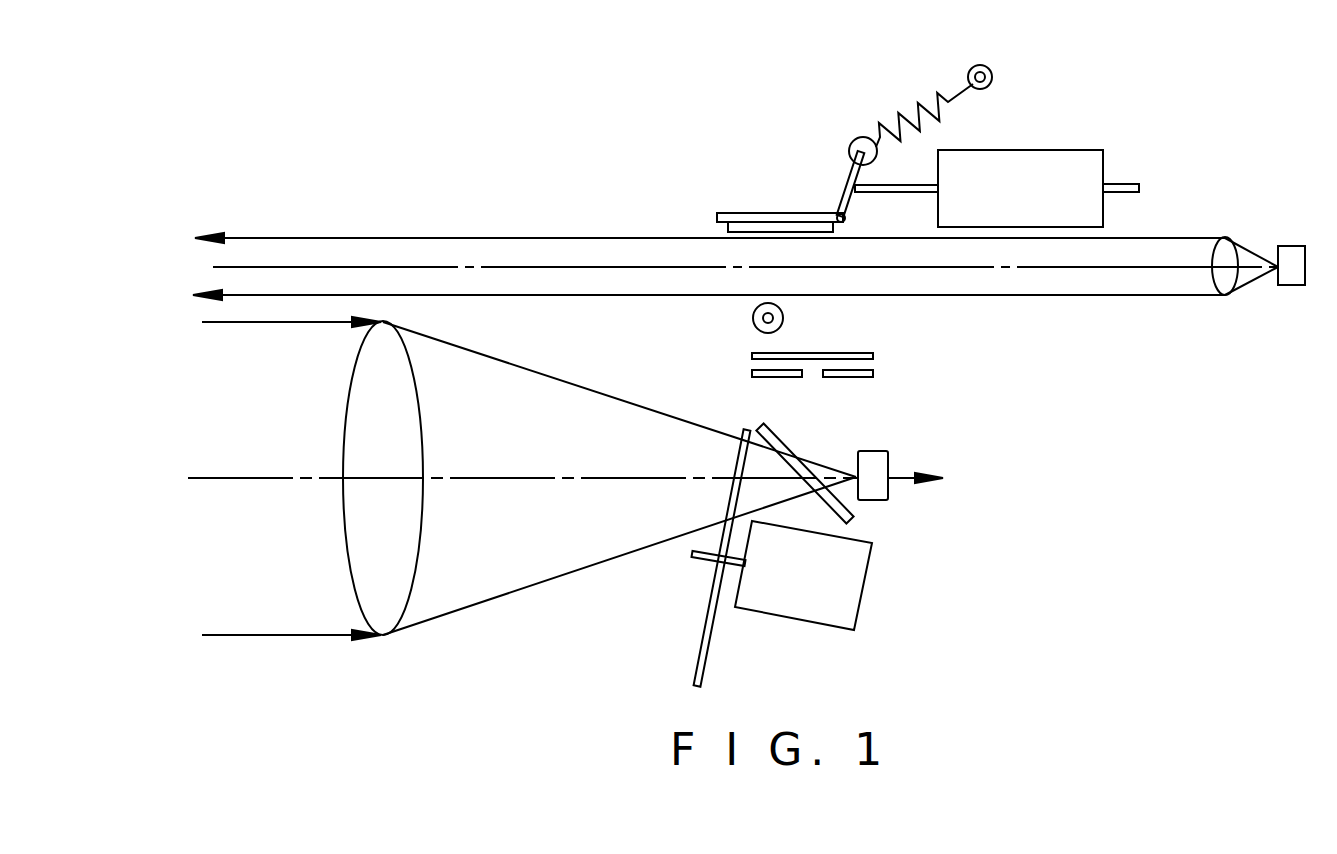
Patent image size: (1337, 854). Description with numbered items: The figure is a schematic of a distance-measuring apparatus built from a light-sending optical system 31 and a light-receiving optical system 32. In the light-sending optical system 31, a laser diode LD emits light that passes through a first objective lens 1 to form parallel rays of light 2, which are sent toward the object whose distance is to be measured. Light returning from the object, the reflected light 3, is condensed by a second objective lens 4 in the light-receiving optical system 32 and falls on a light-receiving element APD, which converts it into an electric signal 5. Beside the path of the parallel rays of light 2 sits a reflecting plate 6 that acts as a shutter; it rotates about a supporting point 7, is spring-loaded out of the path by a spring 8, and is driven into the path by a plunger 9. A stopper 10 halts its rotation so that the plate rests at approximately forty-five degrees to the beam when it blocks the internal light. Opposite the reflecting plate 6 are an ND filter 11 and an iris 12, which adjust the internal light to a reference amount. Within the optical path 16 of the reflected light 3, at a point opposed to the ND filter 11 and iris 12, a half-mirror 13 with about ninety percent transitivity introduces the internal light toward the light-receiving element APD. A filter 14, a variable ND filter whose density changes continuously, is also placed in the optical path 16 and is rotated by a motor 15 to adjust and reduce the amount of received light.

The first objective lens 1 is at (1224, 238).
The parallel rays of light 2 is at (401, 238).
The reflected light 3 is at (318, 637).
The second objective lens 4 is at (368, 363).
The electric signal 5 is at (902, 479).
The reflecting plate 6 is at (760, 213).
The supporting point 7 is at (838, 212).
The spring 8 is at (915, 98).
The plunger 9 is at (1043, 150).
The stopper 10 is at (753, 318).
The ND filter 11 is at (840, 353).
The iris 12 is at (858, 377).
The half-mirror 13 is at (855, 520).
The filter 14 is at (707, 617).
The motor 15 is at (810, 629).
The optical path 16 is at (528, 588).
The light-sending optical system 31 is at (325, 268).
The light-receiving optical system 32 is at (253, 478).
The laser diode LD is at (1292, 246).
The light-receiving element APD is at (873, 457).